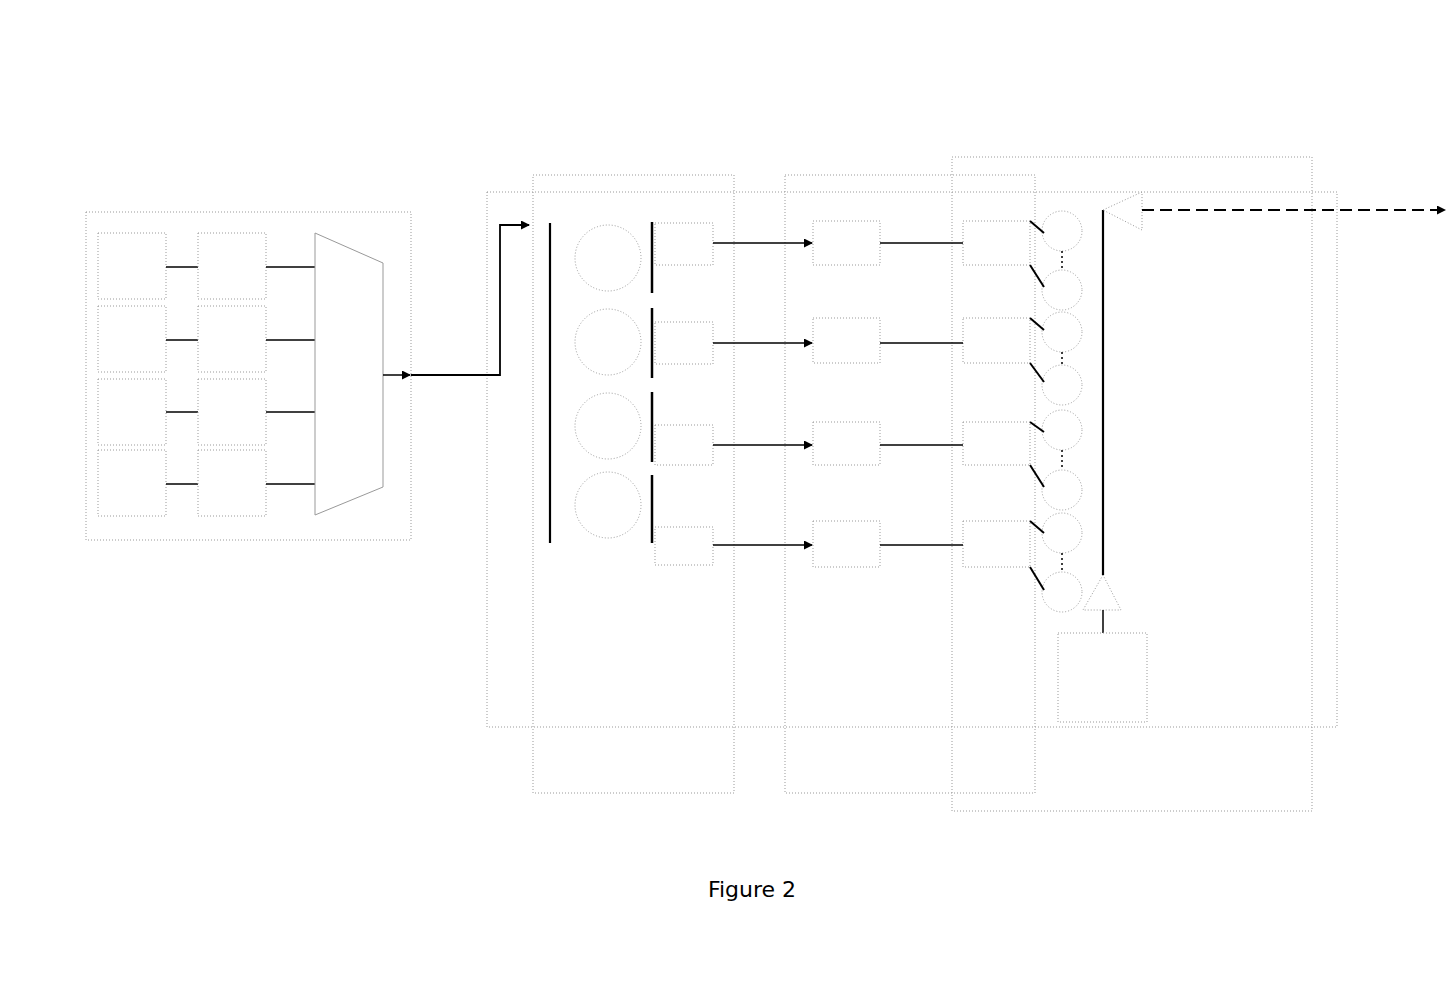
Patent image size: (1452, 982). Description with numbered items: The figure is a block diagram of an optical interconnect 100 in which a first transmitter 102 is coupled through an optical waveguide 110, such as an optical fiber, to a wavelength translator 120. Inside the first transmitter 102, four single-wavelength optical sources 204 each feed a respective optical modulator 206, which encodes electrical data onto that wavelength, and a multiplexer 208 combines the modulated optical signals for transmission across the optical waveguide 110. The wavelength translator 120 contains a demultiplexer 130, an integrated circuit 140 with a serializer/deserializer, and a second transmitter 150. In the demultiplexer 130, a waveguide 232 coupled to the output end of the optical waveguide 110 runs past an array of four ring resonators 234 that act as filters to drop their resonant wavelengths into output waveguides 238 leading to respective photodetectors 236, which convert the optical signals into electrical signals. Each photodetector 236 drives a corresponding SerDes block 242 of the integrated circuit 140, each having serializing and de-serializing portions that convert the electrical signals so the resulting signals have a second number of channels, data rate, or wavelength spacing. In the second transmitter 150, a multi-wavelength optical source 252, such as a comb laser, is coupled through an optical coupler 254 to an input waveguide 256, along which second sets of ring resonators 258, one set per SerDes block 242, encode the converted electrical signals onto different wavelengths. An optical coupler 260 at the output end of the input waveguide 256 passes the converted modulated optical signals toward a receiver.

The optical interconnect 100 is at (185, 128).
The first transmitter 102 is at (250, 540).
The optical waveguide 110 is at (465, 372).
The wavelength translator 120 is at (1269, 192).
The demultiplexer 130 is at (633, 793).
The integrated circuit 140 is at (912, 793).
The second transmitter 150 is at (1170, 811).
The optical source 204 is at (148, 374).
The optical modulator 206 is at (256, 374).
The multiplexer 208 is at (362, 374).
The waveguide 232 is at (550, 490).
The ring resonator 234 is at (608, 381).
The photodetector 236 is at (733, 394).
The output waveguide 238 is at (650, 220).
The SerDes block 242 is at (620, 833).
The optical source 252 is at (1102, 677).
The optical coupler 254 is at (1121, 610).
The input waveguide 256 is at (1103, 458).
The ring resonator 258 is at (1056, 411).
The optical coupler 260 is at (1140, 192).